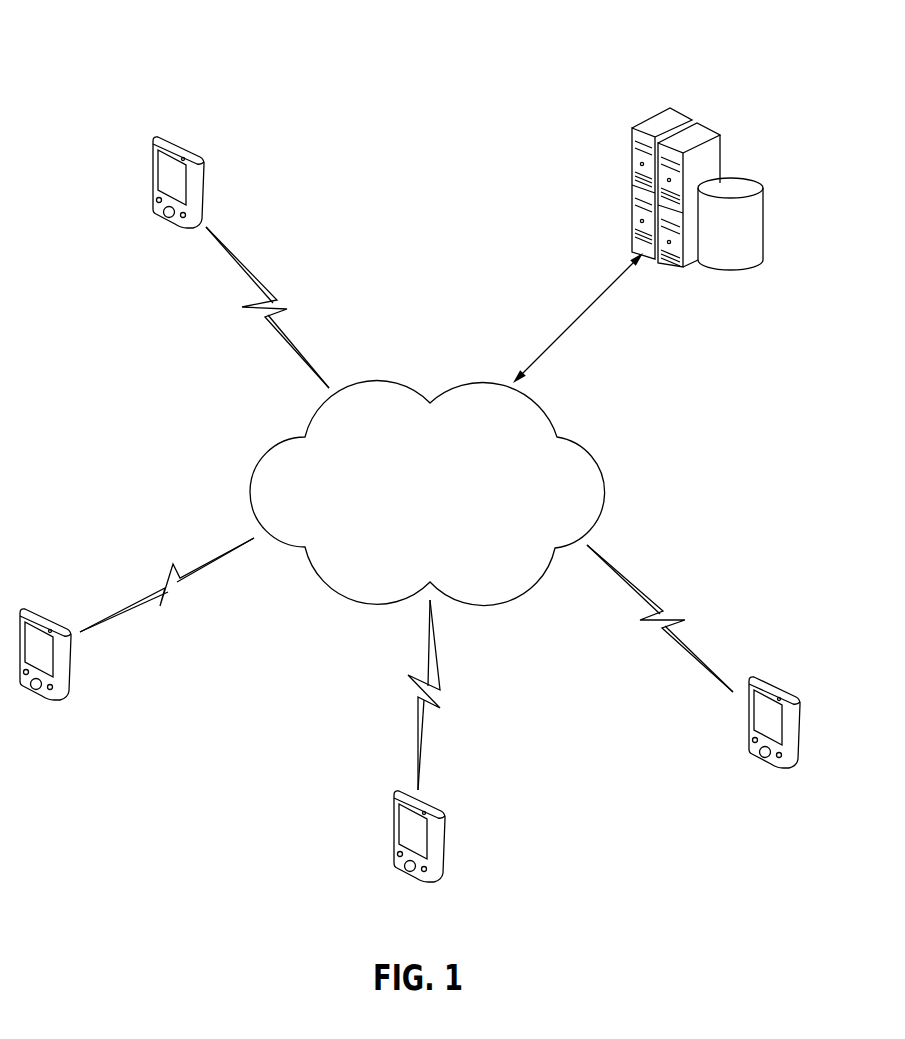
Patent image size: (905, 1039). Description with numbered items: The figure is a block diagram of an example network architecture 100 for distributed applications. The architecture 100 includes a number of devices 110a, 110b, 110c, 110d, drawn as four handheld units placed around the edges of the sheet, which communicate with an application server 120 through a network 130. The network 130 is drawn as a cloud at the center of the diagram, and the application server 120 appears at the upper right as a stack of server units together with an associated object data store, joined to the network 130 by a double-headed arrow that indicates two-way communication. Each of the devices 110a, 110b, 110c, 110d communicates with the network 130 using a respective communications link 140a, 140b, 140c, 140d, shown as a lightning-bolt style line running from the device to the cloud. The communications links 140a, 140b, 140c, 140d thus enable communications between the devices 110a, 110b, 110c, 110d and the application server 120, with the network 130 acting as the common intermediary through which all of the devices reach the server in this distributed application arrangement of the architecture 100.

The network architecture 100 is at (101, 24).
The device 110a is at (168, 132).
The device 110b is at (40, 607).
The device 110c is at (432, 800).
The device 110d is at (777, 685).
The application server 120 is at (667, 108).
The network 130 is at (580, 438).
The communications link 140a is at (276, 300).
The communications link 140b is at (168, 605).
The communications link 140c is at (440, 668).
The communications link 140d is at (657, 635).